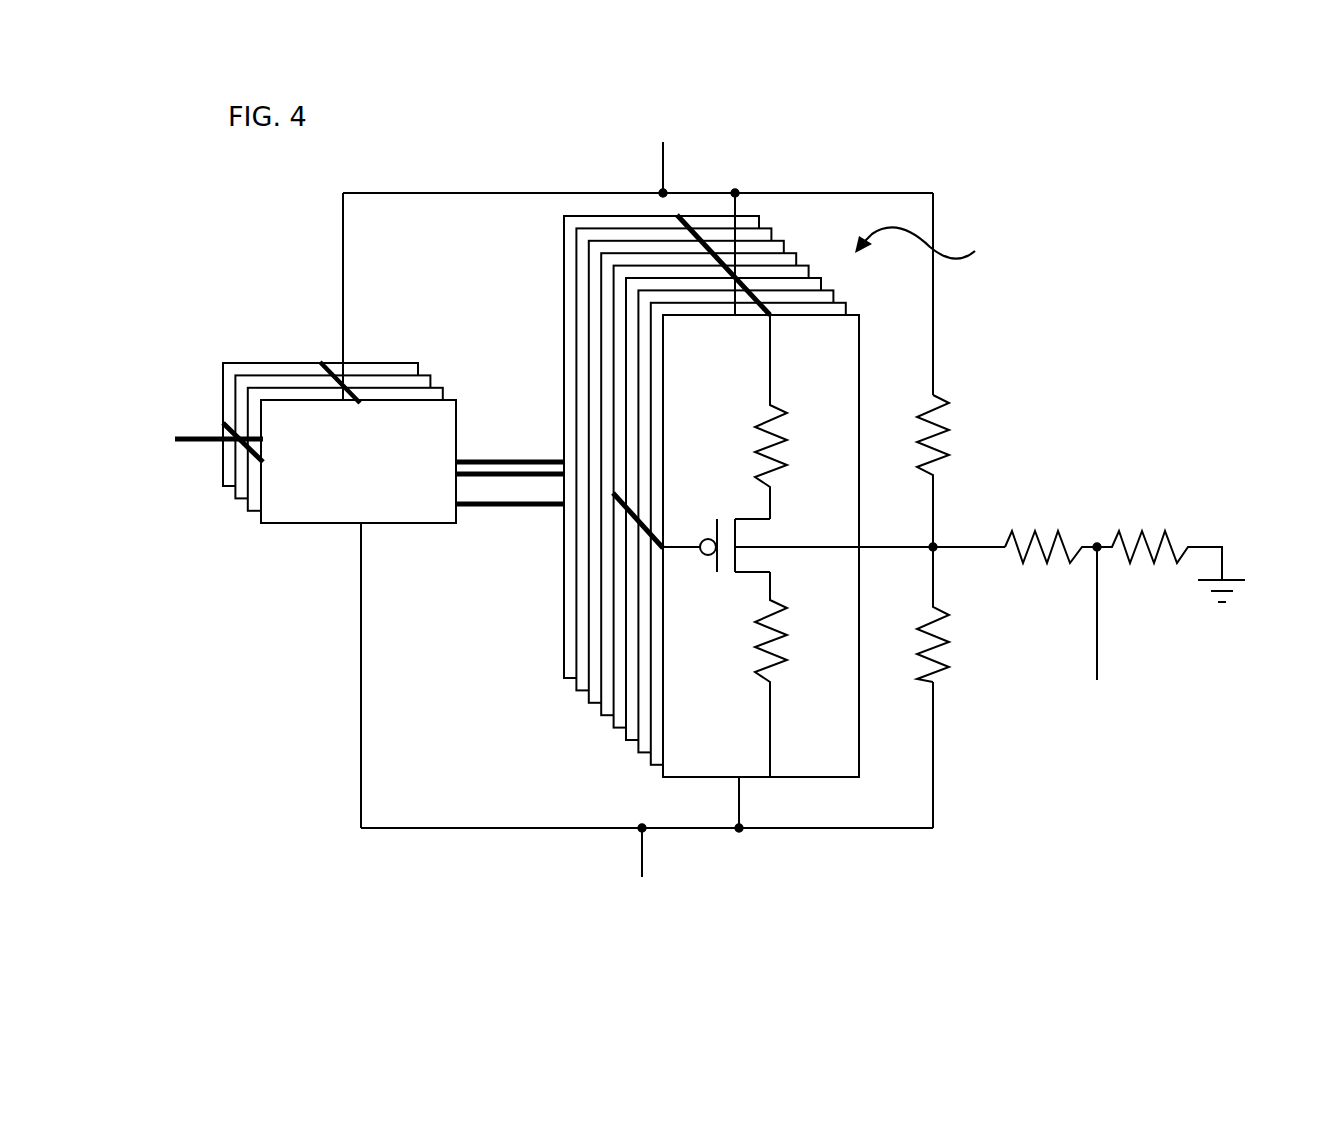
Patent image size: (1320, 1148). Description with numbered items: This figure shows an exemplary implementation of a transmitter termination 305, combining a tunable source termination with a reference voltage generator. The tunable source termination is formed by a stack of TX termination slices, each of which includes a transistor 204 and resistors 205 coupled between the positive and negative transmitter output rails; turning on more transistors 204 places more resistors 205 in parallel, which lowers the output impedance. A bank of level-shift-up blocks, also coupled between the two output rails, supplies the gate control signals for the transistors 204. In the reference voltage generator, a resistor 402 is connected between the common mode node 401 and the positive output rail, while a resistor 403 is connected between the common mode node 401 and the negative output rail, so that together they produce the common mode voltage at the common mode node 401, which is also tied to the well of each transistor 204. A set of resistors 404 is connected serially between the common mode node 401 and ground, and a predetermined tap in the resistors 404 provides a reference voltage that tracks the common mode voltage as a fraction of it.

The transmitter termination 305 is at (710, 487).
The transistor 204 is at (777, 529).
The resistors 205 is at (799, 546).
The VCM node 401 is at (932, 534).
The resistor 402 is at (956, 471).
The resistor 403 is at (959, 614).
The set of resistors 404 is at (1125, 580).